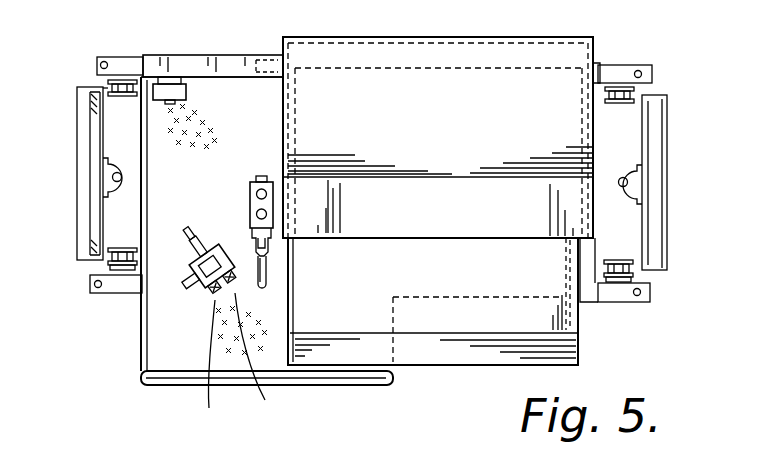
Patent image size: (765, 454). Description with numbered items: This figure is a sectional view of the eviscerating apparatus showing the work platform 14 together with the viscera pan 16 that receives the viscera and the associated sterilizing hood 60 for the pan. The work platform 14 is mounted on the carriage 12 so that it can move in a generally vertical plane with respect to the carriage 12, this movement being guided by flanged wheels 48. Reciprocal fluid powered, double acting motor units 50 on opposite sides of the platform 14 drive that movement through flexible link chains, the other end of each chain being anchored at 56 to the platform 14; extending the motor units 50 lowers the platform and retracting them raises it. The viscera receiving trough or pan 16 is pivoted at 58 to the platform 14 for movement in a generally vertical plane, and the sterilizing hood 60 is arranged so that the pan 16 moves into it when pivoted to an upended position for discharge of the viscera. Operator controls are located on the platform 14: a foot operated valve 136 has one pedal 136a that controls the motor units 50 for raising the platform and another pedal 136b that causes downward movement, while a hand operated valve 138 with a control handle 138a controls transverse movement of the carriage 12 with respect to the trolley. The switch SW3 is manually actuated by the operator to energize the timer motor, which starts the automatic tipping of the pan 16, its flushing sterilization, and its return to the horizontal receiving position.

The carriage 12 is at (667, 137).
The work platform 14 is at (152, 382).
The viscera pan 16 is at (443, 366).
The flanged wheels 48 is at (122, 92).
The motor units 50 is at (118, 197).
The anchor 56 is at (652, 74).
The pivot 58 is at (106, 61).
The sterilizing hood 60 is at (357, 36).
The foot operated valve 136 is at (217, 244).
The pedal 136a is at (187, 361).
The pedal 136b is at (280, 354).
The hand operated valve 138 is at (268, 181).
The control handle 138a is at (272, 274).
The switch SW-3 SW3 is at (190, 92).